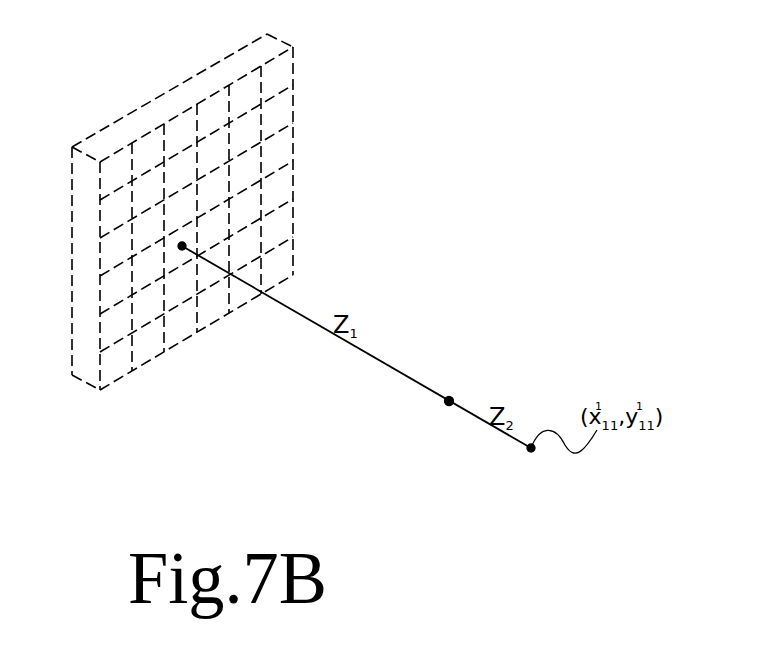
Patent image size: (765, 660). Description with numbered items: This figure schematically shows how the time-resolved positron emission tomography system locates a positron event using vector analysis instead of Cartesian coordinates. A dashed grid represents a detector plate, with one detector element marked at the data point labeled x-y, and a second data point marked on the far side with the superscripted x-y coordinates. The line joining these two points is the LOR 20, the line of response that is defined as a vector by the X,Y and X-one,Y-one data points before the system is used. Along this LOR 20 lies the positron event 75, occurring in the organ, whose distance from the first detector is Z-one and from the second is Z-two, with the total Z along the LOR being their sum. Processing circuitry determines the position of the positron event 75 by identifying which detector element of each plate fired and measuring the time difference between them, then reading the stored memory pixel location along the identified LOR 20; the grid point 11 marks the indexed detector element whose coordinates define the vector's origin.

The grid point (x11, y11) 11 is at (183, 244).
The LOR 20 is at (400, 372).
The positron event 75 is at (449, 401).